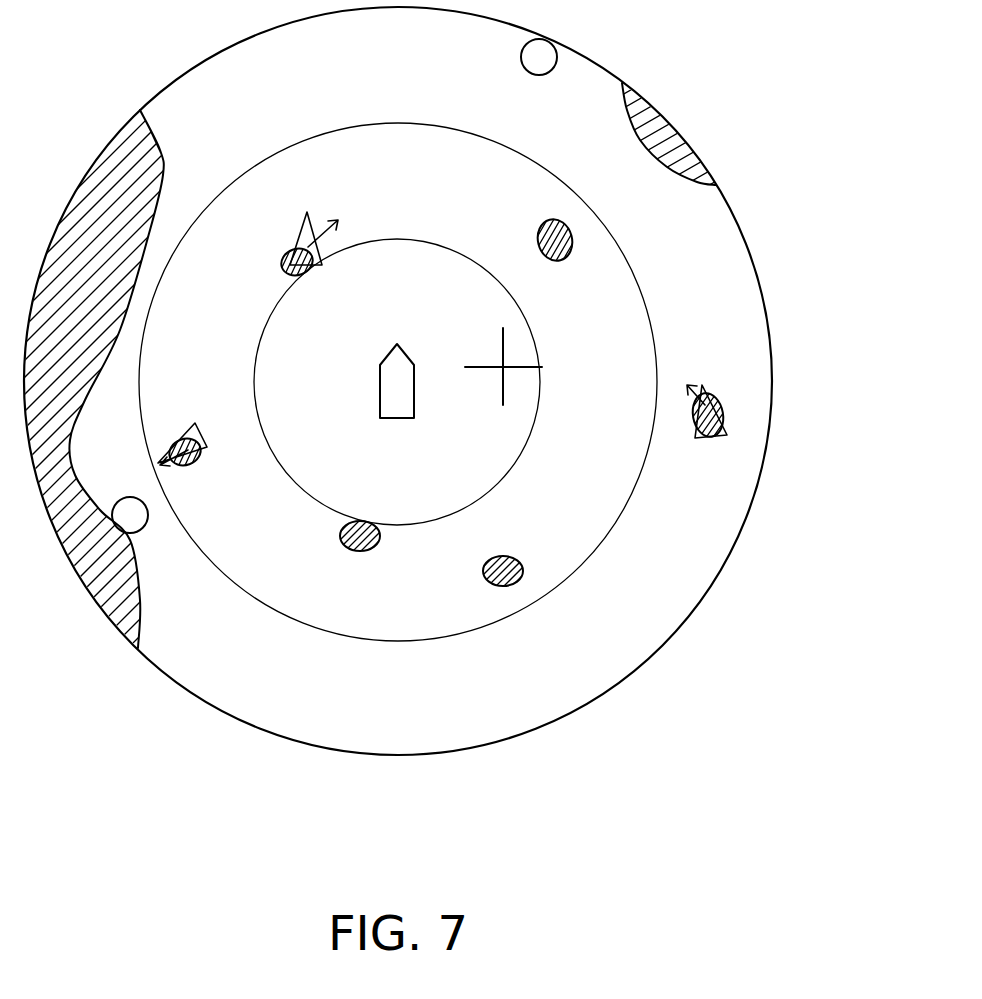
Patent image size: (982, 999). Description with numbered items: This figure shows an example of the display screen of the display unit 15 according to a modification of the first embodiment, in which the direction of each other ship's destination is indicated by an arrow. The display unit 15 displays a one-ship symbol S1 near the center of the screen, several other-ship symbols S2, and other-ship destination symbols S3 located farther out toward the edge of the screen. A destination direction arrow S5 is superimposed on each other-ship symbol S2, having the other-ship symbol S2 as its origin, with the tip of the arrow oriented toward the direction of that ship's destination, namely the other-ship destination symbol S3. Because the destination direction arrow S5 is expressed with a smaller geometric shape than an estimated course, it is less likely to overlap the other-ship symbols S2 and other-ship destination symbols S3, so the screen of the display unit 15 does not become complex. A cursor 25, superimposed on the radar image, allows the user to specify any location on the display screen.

The display unit 15 is at (200, 765).
The other-ship destination symbol S3 is at (557, 63).
The other-ship symbol S2 is at (298, 250).
The destination direction arrow S5 is at (320, 225).
The one-ship symbol S1 is at (385, 418).
The cursor 25 is at (503, 380).